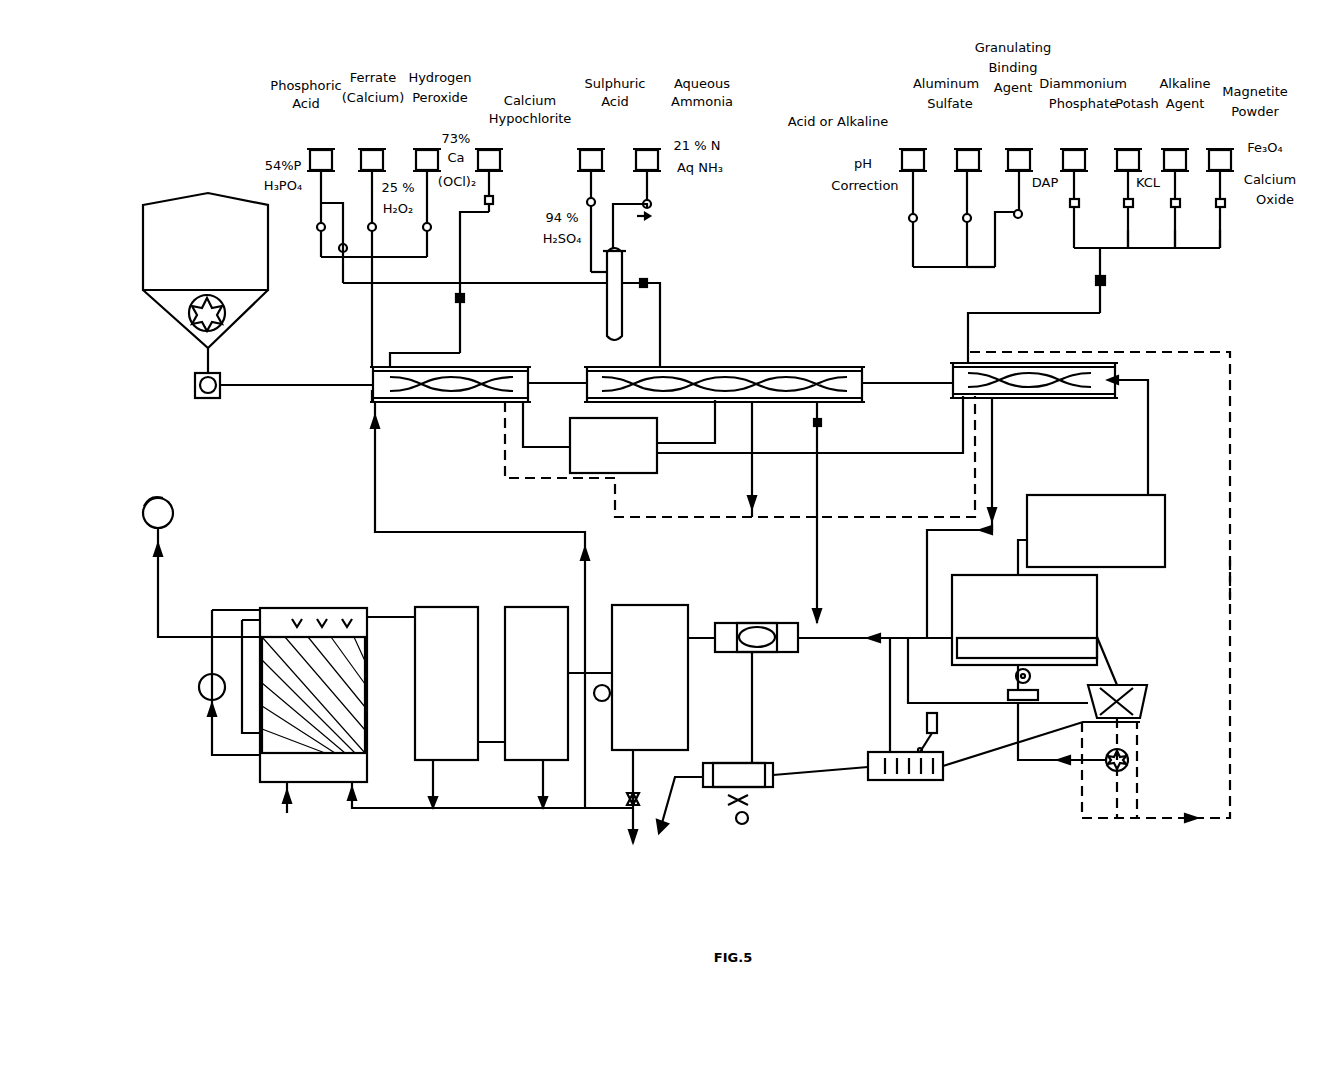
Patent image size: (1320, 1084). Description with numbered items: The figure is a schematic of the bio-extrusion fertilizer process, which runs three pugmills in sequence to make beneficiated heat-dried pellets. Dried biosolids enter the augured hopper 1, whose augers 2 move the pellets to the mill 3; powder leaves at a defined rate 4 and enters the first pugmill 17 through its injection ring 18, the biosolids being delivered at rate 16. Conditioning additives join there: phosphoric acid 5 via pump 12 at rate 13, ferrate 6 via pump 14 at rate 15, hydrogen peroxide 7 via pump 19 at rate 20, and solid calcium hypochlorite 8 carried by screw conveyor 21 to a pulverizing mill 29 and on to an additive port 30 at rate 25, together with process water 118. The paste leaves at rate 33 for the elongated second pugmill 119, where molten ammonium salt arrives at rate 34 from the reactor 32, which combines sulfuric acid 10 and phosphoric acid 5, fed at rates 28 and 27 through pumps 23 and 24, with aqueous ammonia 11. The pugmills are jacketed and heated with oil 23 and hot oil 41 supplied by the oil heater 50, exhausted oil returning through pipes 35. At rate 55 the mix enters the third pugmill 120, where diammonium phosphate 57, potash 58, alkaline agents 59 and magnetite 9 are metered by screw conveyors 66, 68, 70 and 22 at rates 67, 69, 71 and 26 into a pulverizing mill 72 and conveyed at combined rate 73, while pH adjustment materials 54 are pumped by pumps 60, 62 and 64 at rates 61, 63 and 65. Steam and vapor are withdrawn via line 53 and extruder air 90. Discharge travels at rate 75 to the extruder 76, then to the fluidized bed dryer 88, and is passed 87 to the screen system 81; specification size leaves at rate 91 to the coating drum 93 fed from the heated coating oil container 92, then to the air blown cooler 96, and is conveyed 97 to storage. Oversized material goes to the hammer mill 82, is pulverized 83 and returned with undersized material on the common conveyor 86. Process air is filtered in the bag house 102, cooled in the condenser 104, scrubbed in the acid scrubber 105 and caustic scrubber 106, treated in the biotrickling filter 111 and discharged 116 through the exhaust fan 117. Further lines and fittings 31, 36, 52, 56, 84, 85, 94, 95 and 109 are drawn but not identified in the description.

The augured hopper 1 is at (214, 274).
The augers 2 is at (199, 360).
The mill 3 is at (198, 386).
The powder delivery rate 4 is at (296, 400).
The phosphoric acid 5 is at (321, 149).
The ferrate apparatus 6 is at (372, 149).
The hydrogen peroxide 7 is at (427, 149).
The calcium hypochlorite 8 is at (489, 149).
The magnetite 9 is at (1220, 145).
The sulfuric acid 10 is at (591, 149).
The aqueous ammonia 11 is at (647, 149).
The pump 12 is at (331, 214).
The phosphoric acid addition rate 13 is at (369, 270).
The pump 14 is at (344, 242).
The ferrate addition rate 15 is at (354, 248).
The biosolids delivery rate 16 is at (358, 269).
The first pugmill 17 is at (450, 434).
The injection ring 18 is at (355, 402).
The pump 19 is at (437, 214).
The hydrogen peroxide addition rate 20 is at (475, 273).
The screw conveyor 21 is at (501, 191).
The screw conveyor 22 is at (1234, 209).
The heated oil 23 is at (637, 307).
The pump 24 is at (644, 209).
The calcium hypochlorite addition rate 25 is at (474, 282).
The ferric oxide addition rate 26 is at (1234, 234).
The phosphoric acid feed rate 27 is at (635, 221).
The sulfuric acid feed rate 28 is at (584, 271).
The pulverizing mill 29 is at (459, 308).
The additive port 30 is at (425, 345).
The ammonium salt reactor feed line 31 is at (535, 322).
The reactor 32 is at (625, 294).
The first pugmill exit rate 33 is at (557, 371).
The ammonium salt feed rate 34 is at (656, 323).
The oil return pipes 35 is at (740, 456).
The pug mill outlet line 36 is at (775, 459).
The hot oil 41 is at (766, 436).
The oil heater 50 is at (546, 424).
The gas line to baghouse 52 is at (830, 512).
The vapor withdrawal line 53 is at (971, 518).
The pH adjustment materials 54 is at (913, 145).
The second pugmill exit rate 55 is at (922, 267).
The granulating binding agent tank 56 is at (1019, 145).
The diammonium phosphate 57 is at (1074, 145).
The potash 58 is at (1128, 145).
The alkaline agents 59 is at (1175, 145).
The pump 60 is at (899, 219).
The liquid addition rate 61 is at (940, 256).
The pump 62 is at (953, 219).
The liquid addition rate 63 is at (968, 249).
The pump 64 is at (1007, 194).
The liquid addition rate 65 is at (1008, 239).
The screw conveyor 66 is at (1058, 209).
The phosphate addition rate 67 is at (1147, 235).
The screw conveyor 68 is at (1116, 209).
The potash addition rate 69 is at (1143, 232).
The screw conveyor 70 is at (1188, 209).
The alkaline agent addition rate 71 is at (1191, 232).
The pulverizing mill 72 is at (1103, 280).
The combined feed rate 73 is at (1034, 338).
The discharge conveying rate 75 is at (1140, 435).
The extruder 76 is at (1096, 518).
The screen system 81 is at (998, 670).
The hammer mill 82 is at (1168, 780).
The pulverized oversize 83 is at (1109, 768).
The hammer mill discharge line 84 is at (1059, 776).
The recycle line 85 is at (1210, 580).
The common conveyor 86 is at (1100, 586).
The dryer discharge transfer 87 is at (1154, 693).
The fluidized bed dryer 88 is at (1024, 602).
The extruder process air 90 is at (997, 519).
The specification product rate 91 is at (1041, 752).
The coating oil container 92 is at (1061, 731).
The coating drum 93 is at (922, 766).
The line to cooler 94 is at (820, 782).
The air blown cooler fan 95 is at (832, 851).
The air blown cooler 96 is at (789, 743).
The finished product conveyance 97 is at (680, 805).
The bag house 102 is at (820, 673).
The condenser 104 is at (679, 735).
The acid scrubber 105 is at (534, 745).
The caustic scrubber 106 is at (460, 693).
The biotrickling filter 109 is at (284, 685).
The biotrickling filter 111 is at (450, 828).
The air discharge 116 is at (186, 582).
The exhaust fan 117 is at (138, 499).
The process water 118 is at (480, 605).
The second pugmill 119 is at (765, 351).
The third pugmill 120 is at (1043, 421).